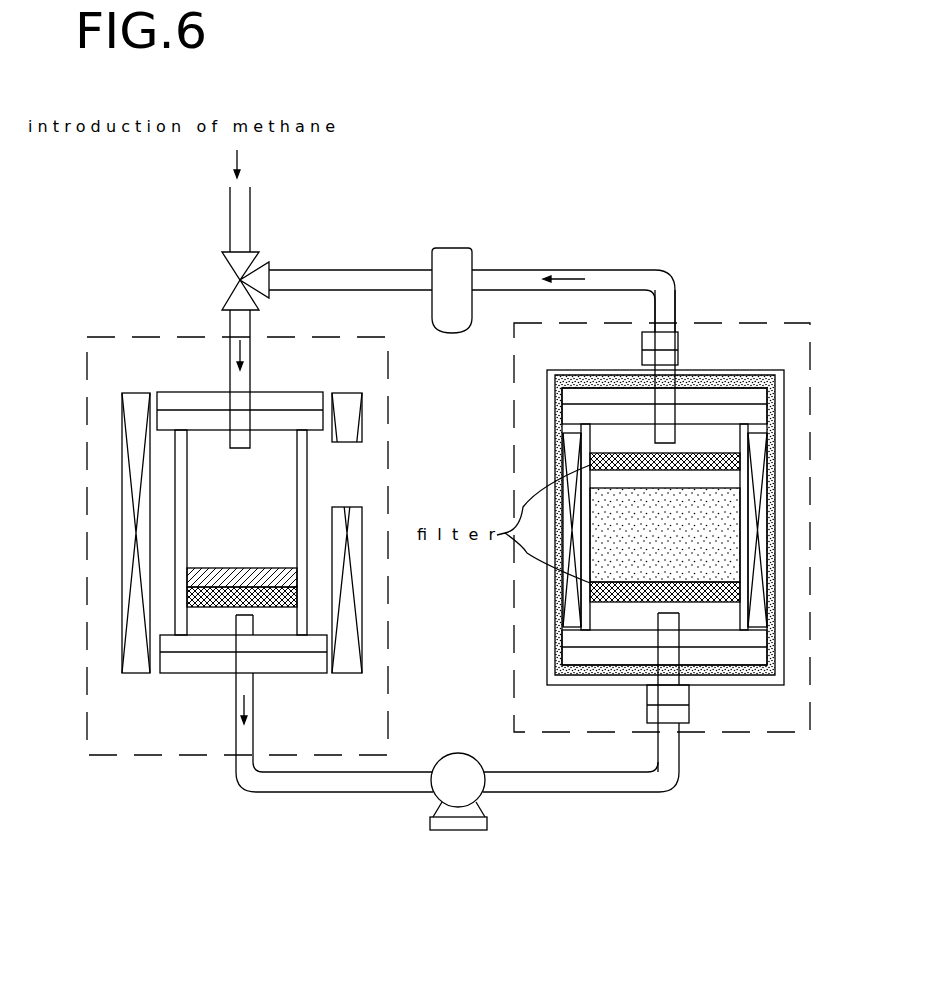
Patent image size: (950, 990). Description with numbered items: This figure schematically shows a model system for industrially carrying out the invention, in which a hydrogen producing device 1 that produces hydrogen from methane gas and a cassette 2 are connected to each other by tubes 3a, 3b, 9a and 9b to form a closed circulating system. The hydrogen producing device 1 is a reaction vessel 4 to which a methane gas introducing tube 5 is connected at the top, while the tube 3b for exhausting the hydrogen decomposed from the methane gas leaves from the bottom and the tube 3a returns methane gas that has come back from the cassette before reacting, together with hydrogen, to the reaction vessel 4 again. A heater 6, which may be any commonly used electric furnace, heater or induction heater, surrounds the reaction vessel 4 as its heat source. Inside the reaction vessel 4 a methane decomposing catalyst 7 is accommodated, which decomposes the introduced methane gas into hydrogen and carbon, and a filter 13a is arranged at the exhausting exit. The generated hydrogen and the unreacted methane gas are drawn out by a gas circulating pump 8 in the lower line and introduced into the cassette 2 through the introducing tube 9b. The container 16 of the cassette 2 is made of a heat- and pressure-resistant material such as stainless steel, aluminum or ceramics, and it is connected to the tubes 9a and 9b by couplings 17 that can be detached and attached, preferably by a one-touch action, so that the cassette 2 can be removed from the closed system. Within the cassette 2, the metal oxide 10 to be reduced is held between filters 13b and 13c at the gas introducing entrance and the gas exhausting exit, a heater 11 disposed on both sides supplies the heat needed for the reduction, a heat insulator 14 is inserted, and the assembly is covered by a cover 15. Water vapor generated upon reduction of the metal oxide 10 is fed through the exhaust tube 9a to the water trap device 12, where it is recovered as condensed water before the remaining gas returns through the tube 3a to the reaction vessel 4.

The hydrogen producing device 1 is at (203, 740).
The cassette 2 is at (765, 717).
The tube 3a is at (300, 277).
The tube 3b is at (323, 783).
The reaction vessel 4 is at (202, 440).
The methane gas introducing tube 5 is at (242, 378).
The heater 6 is at (137, 665).
The methane decomposing catalyst 7 is at (302, 603).
The gas circulating pump 8 is at (497, 837).
The tube 9a is at (667, 283).
The tube 9b is at (623, 780).
The metal oxide 10 is at (656, 555).
The heater 11 is at (574, 600).
The water trap device 12 is at (457, 230).
The filter 13a is at (242, 610).
The filter 13b is at (665, 448).
The filter 13c is at (665, 607).
The heat insulator 14 is at (300, 588).
The cover 15 is at (547, 372).
The container 16 is at (722, 438).
The coupling 17 is at (673, 342).